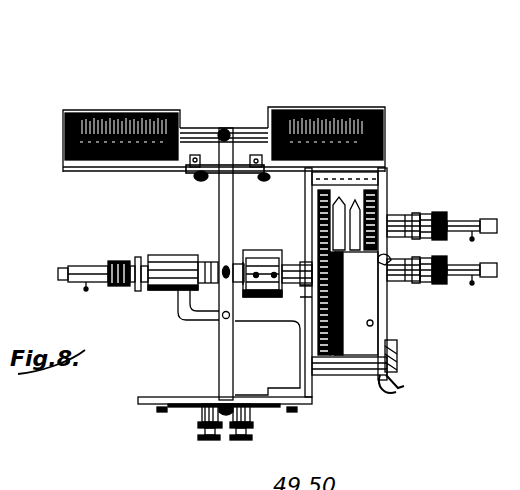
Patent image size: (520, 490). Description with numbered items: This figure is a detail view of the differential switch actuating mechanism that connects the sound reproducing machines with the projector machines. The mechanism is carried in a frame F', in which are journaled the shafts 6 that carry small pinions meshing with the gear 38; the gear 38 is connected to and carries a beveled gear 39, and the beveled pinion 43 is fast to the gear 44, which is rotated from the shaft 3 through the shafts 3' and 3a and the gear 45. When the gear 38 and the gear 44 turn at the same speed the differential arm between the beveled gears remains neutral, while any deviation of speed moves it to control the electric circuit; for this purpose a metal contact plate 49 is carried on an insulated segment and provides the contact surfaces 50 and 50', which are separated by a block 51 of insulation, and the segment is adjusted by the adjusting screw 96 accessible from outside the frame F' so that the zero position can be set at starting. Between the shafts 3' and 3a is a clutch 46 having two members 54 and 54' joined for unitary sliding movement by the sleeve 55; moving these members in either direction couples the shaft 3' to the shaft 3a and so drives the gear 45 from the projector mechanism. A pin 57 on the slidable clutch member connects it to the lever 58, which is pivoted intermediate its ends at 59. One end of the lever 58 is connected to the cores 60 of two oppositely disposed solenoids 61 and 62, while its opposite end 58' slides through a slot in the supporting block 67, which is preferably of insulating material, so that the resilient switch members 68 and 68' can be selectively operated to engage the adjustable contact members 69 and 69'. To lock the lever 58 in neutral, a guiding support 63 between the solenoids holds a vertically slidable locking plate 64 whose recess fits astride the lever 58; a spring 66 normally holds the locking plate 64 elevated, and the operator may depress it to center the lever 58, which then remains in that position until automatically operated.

The shaft 3 is at (102, 262).
The shaft 3' is at (200, 253).
The shaft 3a is at (290, 302).
The shaft 6 is at (492, 220).
The gear 38 is at (370, 205).
The beveled gear 39 is at (372, 216).
The beveled pinion 43 is at (337, 208).
The gear 44 is at (318, 336).
The gear 45 is at (305, 292).
The clutch 46 is at (258, 258).
The metal contact plate 49 is at (374, 300).
The contact surface 50 is at (424, 251).
The contact surface 50' is at (383, 400).
The block of insulation 51 is at (356, 345).
The clutch member 54 is at (255, 242).
The clutch member 54' is at (292, 240).
The sleeve 55 is at (228, 318).
The pin 57 is at (205, 290).
The lever 58 is at (243, 264).
The lever end 58' is at (203, 384).
The pivot 59 is at (213, 321).
The cores 60 is at (210, 128).
The solenoid 61 is at (127, 116).
The solenoid 62 is at (318, 112).
The guiding support 63 is at (185, 172).
The locking plate 64 is at (210, 178).
The spring 66 is at (196, 180).
The supporting block 67 is at (153, 396).
The resilient switch member 68 is at (177, 431).
The resilient switch member 68' is at (278, 421).
The adjustable contact member 69 is at (201, 446).
The adjustable contact member 69' is at (260, 443).
The adjusting screw 96 is at (398, 355).
The frame F' is at (412, 332).